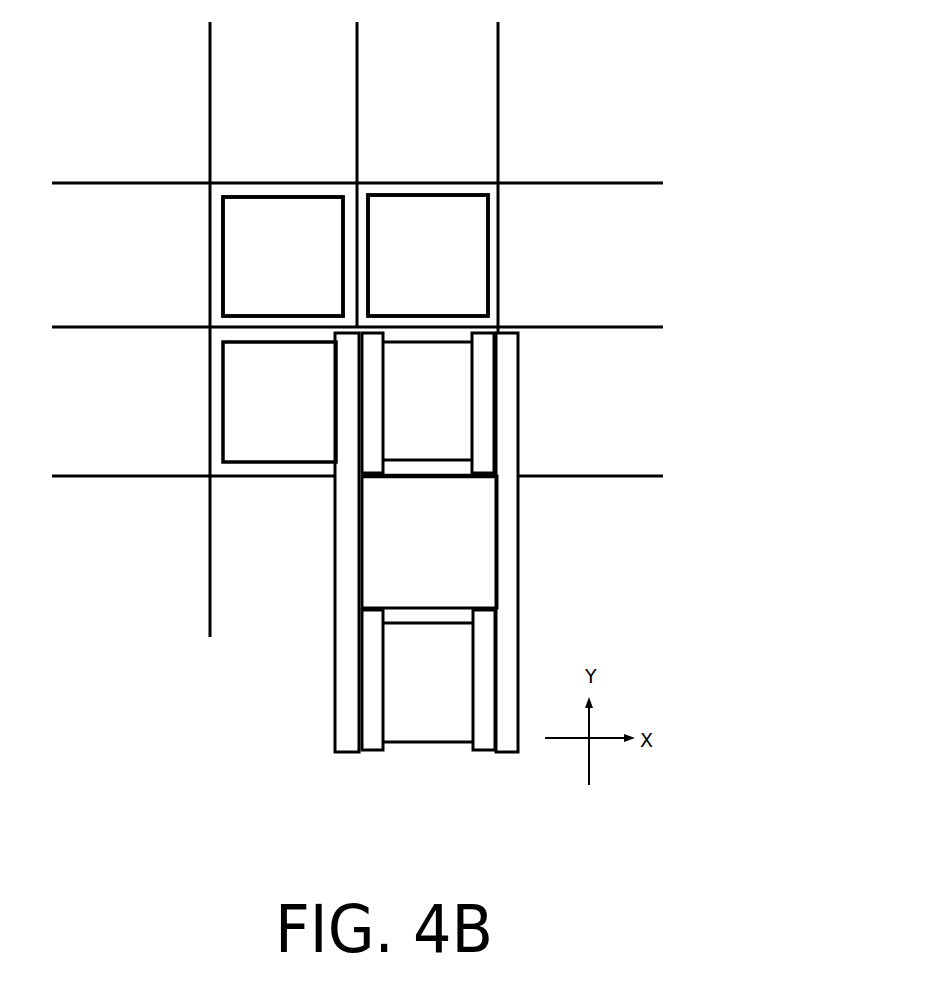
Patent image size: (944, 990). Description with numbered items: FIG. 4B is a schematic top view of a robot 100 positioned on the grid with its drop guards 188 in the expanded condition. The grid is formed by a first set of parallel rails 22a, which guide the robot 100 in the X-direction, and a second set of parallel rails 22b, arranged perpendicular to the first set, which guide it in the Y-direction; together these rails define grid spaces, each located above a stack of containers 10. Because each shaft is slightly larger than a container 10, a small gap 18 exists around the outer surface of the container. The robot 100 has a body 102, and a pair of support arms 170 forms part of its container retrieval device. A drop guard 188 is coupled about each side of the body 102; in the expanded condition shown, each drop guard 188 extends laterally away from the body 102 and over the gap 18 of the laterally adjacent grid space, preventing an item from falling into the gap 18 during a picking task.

The container 10 is at (222, 230).
The gap 18 is at (217, 273).
The first set of parallel rails 22a is at (100, 187).
The second set of parallel rails 22b is at (500, 105).
The robot 100 is at (518, 568).
The body 102 is at (450, 556).
The support arms 170 is at (376, 330).
The drop guard 188 is at (335, 467).